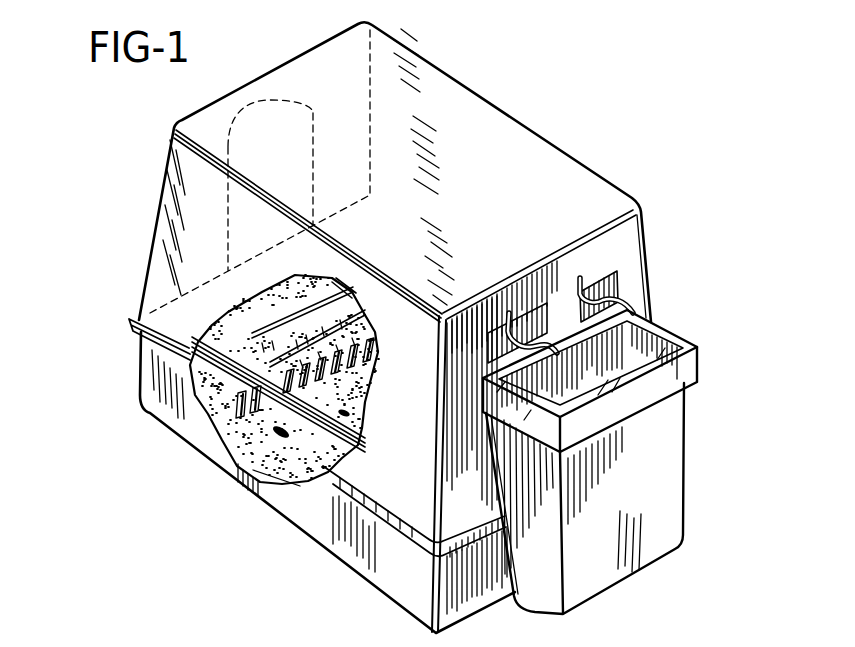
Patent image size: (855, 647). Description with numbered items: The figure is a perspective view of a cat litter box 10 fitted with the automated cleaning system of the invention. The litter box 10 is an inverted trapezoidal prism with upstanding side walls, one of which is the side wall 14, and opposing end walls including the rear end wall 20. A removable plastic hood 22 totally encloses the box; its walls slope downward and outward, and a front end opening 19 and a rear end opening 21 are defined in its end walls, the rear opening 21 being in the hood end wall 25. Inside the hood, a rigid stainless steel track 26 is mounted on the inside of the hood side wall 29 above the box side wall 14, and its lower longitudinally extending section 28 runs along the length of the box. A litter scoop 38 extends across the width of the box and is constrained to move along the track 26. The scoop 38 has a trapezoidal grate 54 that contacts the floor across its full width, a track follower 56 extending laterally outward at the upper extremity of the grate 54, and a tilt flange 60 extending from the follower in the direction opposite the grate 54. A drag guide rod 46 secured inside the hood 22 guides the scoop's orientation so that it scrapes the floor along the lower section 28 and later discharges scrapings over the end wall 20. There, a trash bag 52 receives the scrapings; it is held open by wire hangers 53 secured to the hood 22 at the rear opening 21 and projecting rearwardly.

The cat litter box 10 is at (128, 396).
The side wall 14 is at (311, 512).
The front end opening 19 is at (315, 143).
The end wall 20 is at (480, 590).
The rear end opening 21 is at (548, 305).
The hood 22 is at (312, 70).
The end wall of the hood 25 is at (617, 245).
The track 26 is at (190, 405).
The lower longitudinally extending section 28 is at (259, 496).
The side wall of the hood 29 is at (195, 223).
The litter scoop 38 is at (213, 430).
The drag guide rod 46 is at (365, 393).
The trash bag 52 is at (657, 503).
The wire hangers 53 is at (530, 318).
The grate 54 is at (363, 313).
The track follower 56 is at (220, 340).
The tilt flange 60 is at (337, 274).